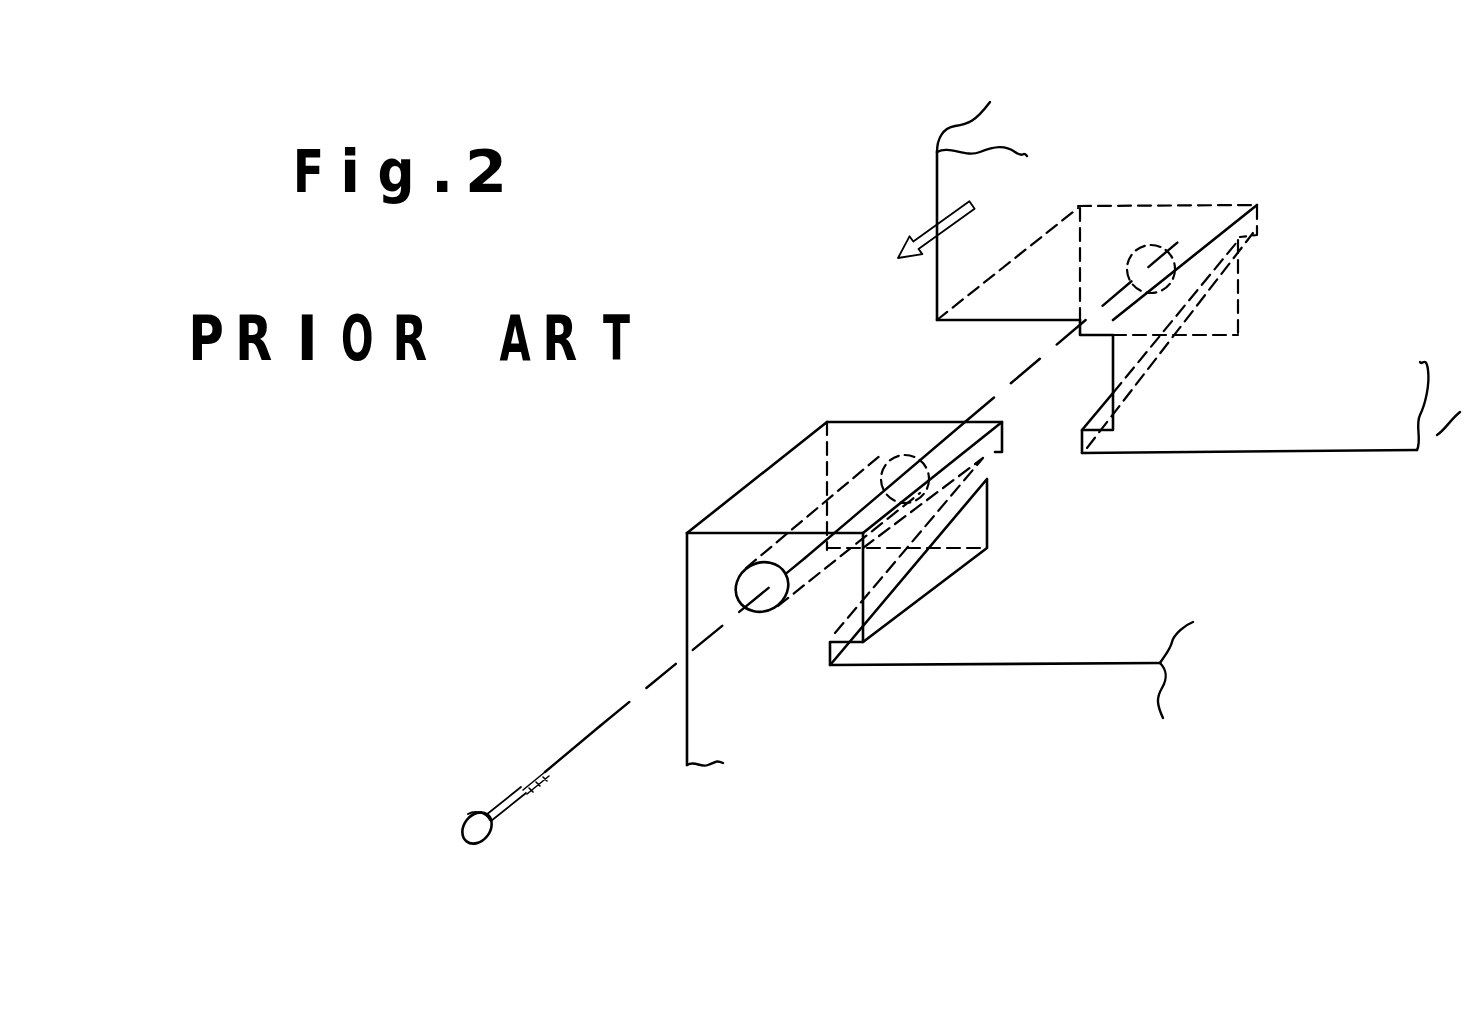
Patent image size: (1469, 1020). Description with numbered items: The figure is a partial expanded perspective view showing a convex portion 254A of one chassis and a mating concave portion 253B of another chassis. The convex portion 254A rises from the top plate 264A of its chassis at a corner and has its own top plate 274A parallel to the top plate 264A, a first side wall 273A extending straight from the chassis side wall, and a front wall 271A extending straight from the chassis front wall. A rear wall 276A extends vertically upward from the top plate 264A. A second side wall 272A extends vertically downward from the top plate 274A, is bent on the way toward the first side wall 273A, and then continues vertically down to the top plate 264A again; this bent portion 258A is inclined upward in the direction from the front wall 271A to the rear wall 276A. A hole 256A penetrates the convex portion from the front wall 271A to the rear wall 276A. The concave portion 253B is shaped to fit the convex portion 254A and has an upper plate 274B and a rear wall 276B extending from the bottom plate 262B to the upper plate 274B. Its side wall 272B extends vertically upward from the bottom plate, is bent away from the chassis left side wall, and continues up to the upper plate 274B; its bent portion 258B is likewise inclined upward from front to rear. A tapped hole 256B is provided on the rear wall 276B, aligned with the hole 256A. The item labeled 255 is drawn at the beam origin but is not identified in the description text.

The laser light source 255 is at (473, 840).
The first side wall 273A is at (683, 612).
The convex portion 254A is at (630, 560).
The front wall 271A is at (715, 705).
The hole 256A is at (765, 602).
The second side wall 272A is at (862, 562).
The top plate 274A is at (735, 512).
The rear wall 276A is at (858, 421).
The bent portion 258A is at (962, 512).
The top plate 264A is at (1022, 637).
The concave portion 253B is at (1312, 252).
The upper plate 274B is at (1083, 258).
The rear wall 276B is at (1130, 207).
The side wall 272B is at (1130, 353).
The tapped hole 256B is at (1158, 254).
The bent portion 258B is at (1243, 310).
The bottom plate 262B is at (1328, 452).